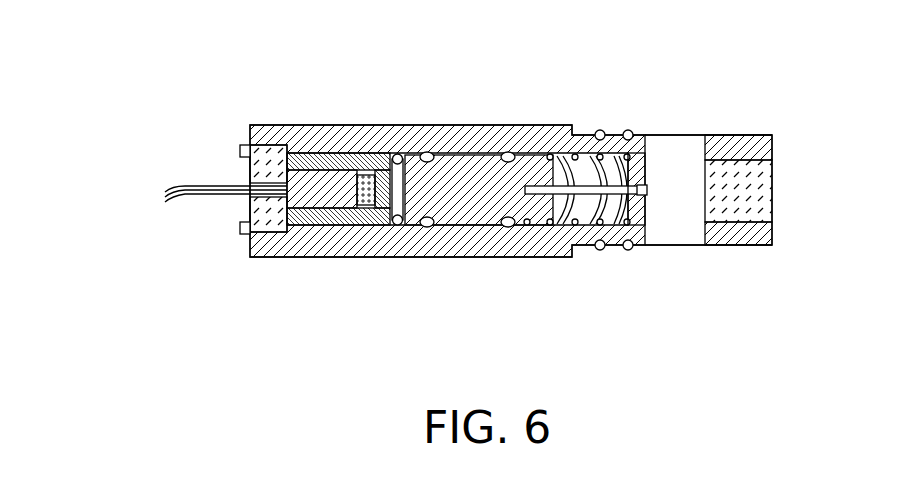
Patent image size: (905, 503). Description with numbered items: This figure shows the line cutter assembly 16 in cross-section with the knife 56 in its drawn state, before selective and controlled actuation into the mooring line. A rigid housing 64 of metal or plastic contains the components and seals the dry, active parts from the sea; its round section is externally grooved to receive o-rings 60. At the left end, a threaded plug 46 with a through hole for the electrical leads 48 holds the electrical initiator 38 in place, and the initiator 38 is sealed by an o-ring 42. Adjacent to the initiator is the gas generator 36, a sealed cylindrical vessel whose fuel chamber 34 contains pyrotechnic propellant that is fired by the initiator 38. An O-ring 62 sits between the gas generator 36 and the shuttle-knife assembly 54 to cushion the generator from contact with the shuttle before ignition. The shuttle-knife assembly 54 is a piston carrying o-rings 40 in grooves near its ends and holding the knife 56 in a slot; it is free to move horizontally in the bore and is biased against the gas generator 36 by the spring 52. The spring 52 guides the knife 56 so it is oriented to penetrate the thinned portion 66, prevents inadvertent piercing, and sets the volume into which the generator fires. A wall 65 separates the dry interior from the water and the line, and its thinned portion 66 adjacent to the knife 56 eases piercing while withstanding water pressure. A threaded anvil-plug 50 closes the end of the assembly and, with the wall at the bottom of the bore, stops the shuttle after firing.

The line cutter assembly 16 is at (184, 47).
The fuel chamber 34 is at (394, 152).
The gas generator 36 is at (322, 155).
The electrical initiator 38 is at (302, 222).
The o-rings 40 is at (440, 125).
The o-ring 42 is at (330, 210).
The threaded plug 46 is at (265, 140).
The electrical leads 48 is at (215, 196).
The threaded anvil-plug 50 is at (740, 170).
The spring 52 is at (572, 198).
The shuttle-knife assembly 54 is at (483, 207).
The knife 56 is at (556, 172).
The o-rings 60 is at (598, 130).
The O-ring 62 is at (395, 224).
The housing 64 is at (483, 125).
The wall 65 is at (640, 133).
The thinned portion 66 is at (648, 190).